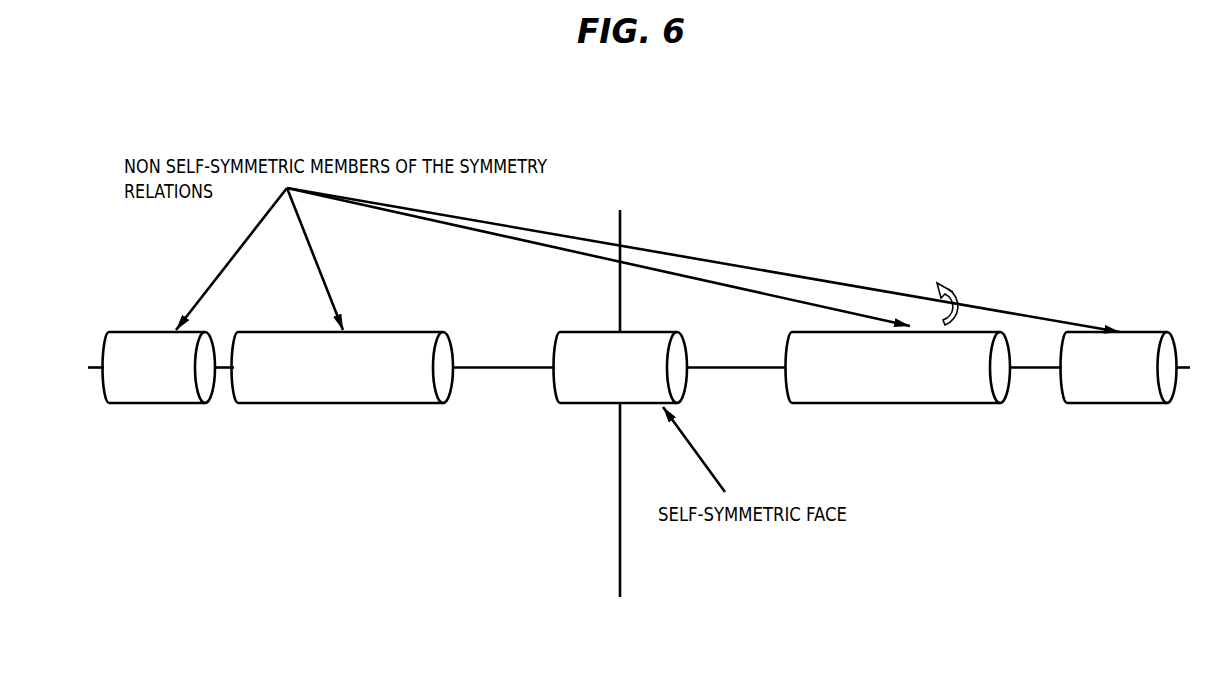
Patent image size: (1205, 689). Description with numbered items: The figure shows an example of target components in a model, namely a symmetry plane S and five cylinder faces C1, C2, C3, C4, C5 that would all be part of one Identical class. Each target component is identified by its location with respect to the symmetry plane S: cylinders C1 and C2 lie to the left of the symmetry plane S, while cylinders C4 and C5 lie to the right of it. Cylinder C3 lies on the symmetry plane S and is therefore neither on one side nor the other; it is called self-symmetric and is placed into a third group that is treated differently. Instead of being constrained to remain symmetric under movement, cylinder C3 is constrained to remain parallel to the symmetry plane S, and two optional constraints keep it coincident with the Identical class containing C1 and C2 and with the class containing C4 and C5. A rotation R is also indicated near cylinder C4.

The cylinder face C1 is at (205, 408).
The cylinder face C2 is at (375, 408).
The cylinder face C3 is at (558, 408).
The cylinder face C4 is at (988, 408).
The cylinder face C5 is at (1098, 408).
The symmetry plane S is at (628, 525).
The rotation R is at (958, 303).